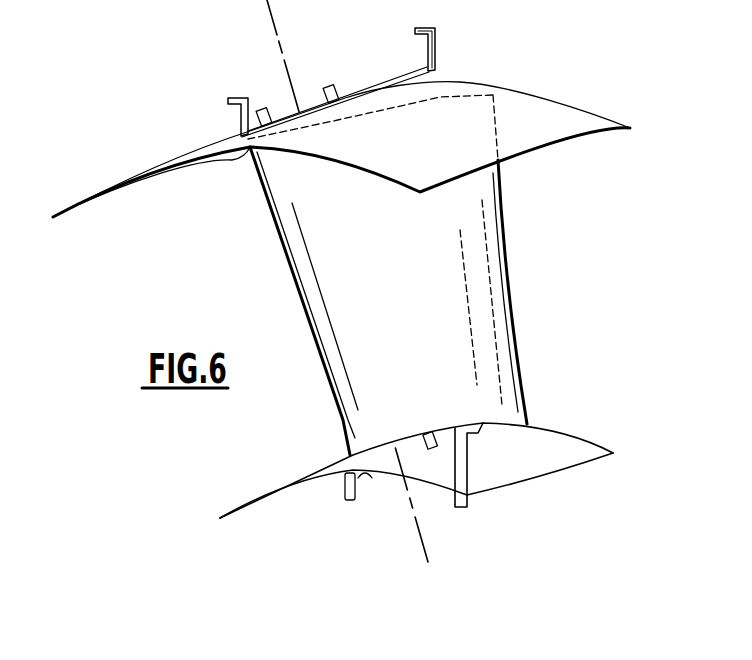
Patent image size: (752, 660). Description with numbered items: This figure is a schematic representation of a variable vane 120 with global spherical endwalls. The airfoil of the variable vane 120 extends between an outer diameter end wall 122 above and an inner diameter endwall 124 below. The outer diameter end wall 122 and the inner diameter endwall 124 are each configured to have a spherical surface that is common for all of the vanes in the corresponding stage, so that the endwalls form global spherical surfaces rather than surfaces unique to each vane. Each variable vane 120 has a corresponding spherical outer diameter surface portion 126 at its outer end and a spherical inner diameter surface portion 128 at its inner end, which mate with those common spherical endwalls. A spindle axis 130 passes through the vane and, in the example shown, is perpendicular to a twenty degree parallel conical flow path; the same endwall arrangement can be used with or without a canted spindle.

The variable vane 120 is at (480, 295).
The outer diameter end wall 122 is at (572, 117).
The inner diameter endwall 124 is at (557, 450).
The spherical outer diameter surface portion 126 is at (458, 97).
The spherical inner diameter surface portion 128 is at (500, 425).
The spindle axis 130 is at (284, 72).